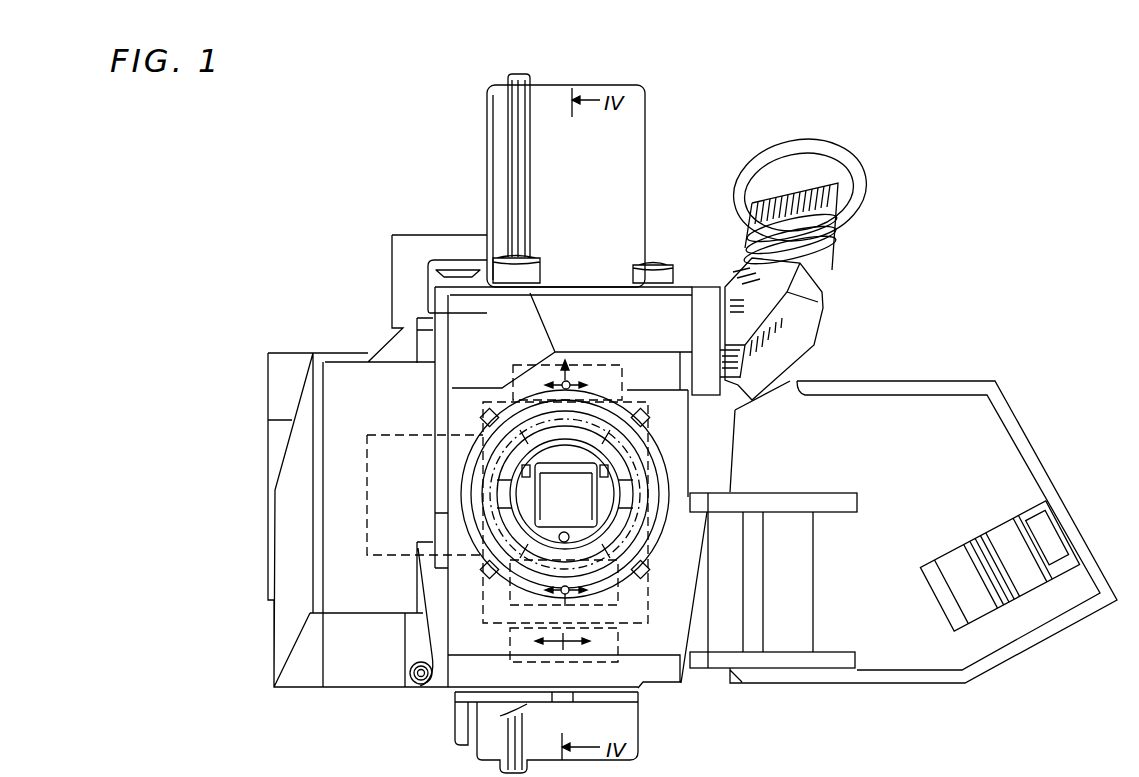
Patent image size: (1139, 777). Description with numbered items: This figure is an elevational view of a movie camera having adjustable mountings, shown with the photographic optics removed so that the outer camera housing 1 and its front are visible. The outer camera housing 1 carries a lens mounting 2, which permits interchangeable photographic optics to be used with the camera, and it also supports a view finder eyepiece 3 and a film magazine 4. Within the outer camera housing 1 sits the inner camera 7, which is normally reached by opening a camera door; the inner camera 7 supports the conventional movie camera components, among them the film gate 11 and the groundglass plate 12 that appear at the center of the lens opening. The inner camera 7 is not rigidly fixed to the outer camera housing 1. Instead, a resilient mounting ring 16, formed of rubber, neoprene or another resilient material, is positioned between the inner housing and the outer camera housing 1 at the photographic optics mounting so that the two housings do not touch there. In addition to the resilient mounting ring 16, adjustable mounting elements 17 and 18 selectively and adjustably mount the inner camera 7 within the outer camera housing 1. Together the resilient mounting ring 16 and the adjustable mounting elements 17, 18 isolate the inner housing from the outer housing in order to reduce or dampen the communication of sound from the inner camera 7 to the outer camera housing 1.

The outer camera housing 1 is at (372, 677).
The lens mounting 2 is at (472, 443).
The view finder eyepiece 3 is at (845, 247).
The film magazine 4 is at (633, 211).
The inner camera 7 is at (650, 593).
The film gate 11 is at (562, 496).
The groundglass plate 12 is at (535, 467).
The resilient mounting ring 16 is at (647, 447).
The adjustable mounting element 17 is at (525, 659).
The adjustable mounting element 18 is at (640, 638).